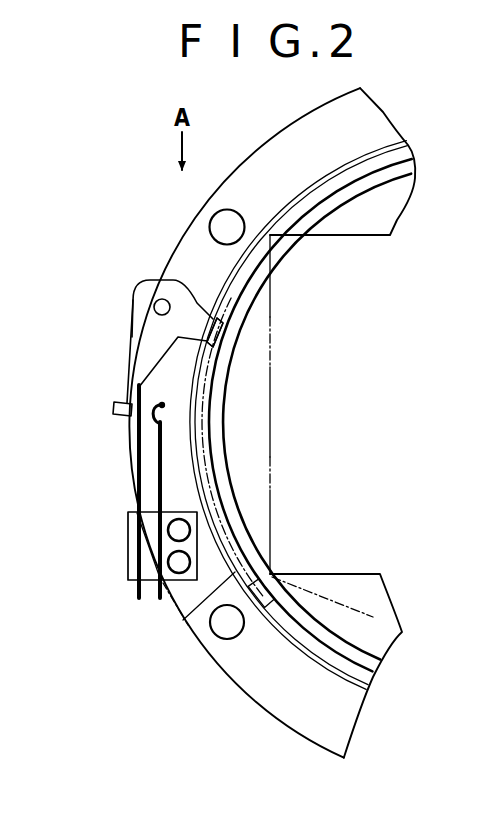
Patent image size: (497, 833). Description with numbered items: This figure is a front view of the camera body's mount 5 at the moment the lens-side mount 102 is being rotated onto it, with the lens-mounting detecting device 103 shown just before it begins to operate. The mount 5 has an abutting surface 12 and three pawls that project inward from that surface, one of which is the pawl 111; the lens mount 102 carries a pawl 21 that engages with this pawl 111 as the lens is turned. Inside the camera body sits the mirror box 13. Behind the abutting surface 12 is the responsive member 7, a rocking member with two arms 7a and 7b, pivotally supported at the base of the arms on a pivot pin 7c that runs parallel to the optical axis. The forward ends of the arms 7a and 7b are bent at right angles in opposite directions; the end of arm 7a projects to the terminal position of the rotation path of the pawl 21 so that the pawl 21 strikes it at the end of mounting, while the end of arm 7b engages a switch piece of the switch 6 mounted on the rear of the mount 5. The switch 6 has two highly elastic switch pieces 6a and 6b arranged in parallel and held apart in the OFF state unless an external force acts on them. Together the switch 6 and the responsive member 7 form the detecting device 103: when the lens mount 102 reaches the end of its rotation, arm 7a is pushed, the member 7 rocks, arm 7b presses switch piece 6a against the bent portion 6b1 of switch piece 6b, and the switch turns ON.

The mount 5 is at (255, 703).
The switch 6 is at (200, 505).
The switch piece 6a is at (136, 492).
The switch piece 6b is at (200, 501).
The bent portion 6b1 is at (165, 406).
The responsive member 7 is at (201, 332).
The arm 7a is at (222, 321).
The arm 7b is at (123, 403).
The pivot pin 7c is at (155, 302).
The abutting surface 12 is at (308, 713).
The mirror box 13 is at (272, 458).
The pawl 21 is at (190, 617).
The mount 102 is at (350, 657).
The detecting device 103 is at (72, 283).
The pawl 111 is at (228, 518).